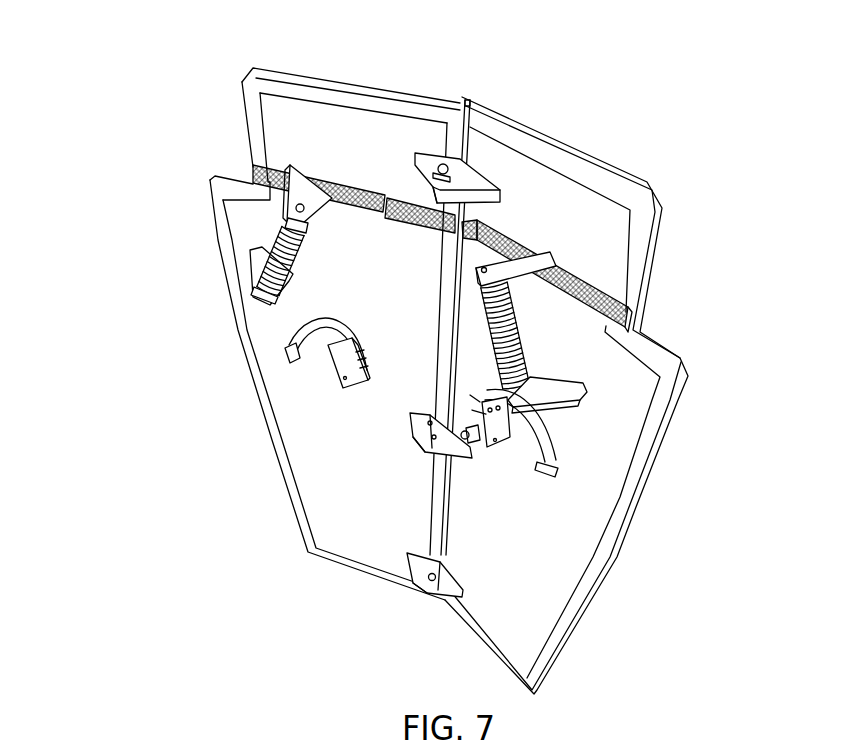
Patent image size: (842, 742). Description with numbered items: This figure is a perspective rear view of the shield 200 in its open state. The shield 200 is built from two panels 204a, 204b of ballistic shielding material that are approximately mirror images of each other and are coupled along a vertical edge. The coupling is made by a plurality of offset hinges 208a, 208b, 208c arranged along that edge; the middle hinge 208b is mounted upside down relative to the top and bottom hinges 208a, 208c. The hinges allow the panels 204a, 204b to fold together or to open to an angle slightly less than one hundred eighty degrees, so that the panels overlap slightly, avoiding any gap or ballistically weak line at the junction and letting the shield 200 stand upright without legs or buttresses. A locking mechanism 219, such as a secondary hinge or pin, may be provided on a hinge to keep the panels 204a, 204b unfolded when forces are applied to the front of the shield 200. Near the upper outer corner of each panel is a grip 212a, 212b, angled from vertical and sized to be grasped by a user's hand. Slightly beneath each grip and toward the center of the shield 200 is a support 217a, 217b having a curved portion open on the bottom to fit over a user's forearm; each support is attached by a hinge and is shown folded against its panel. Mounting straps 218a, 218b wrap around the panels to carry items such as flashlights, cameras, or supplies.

The shield 200 is at (139, 46).
The panel 204a is at (530, 632).
The panel 204b is at (307, 450).
The hinge 208a is at (472, 185).
The hinge 208b is at (473, 457).
The hinge 208c is at (410, 568).
The grip 212a is at (517, 337).
The grip 212b is at (273, 245).
The support 217a is at (560, 437).
The support 217b is at (280, 337).
The mounting strap 218a is at (503, 230).
The mounting strap 218b is at (355, 187).
The locking mechanism 219 is at (473, 440).